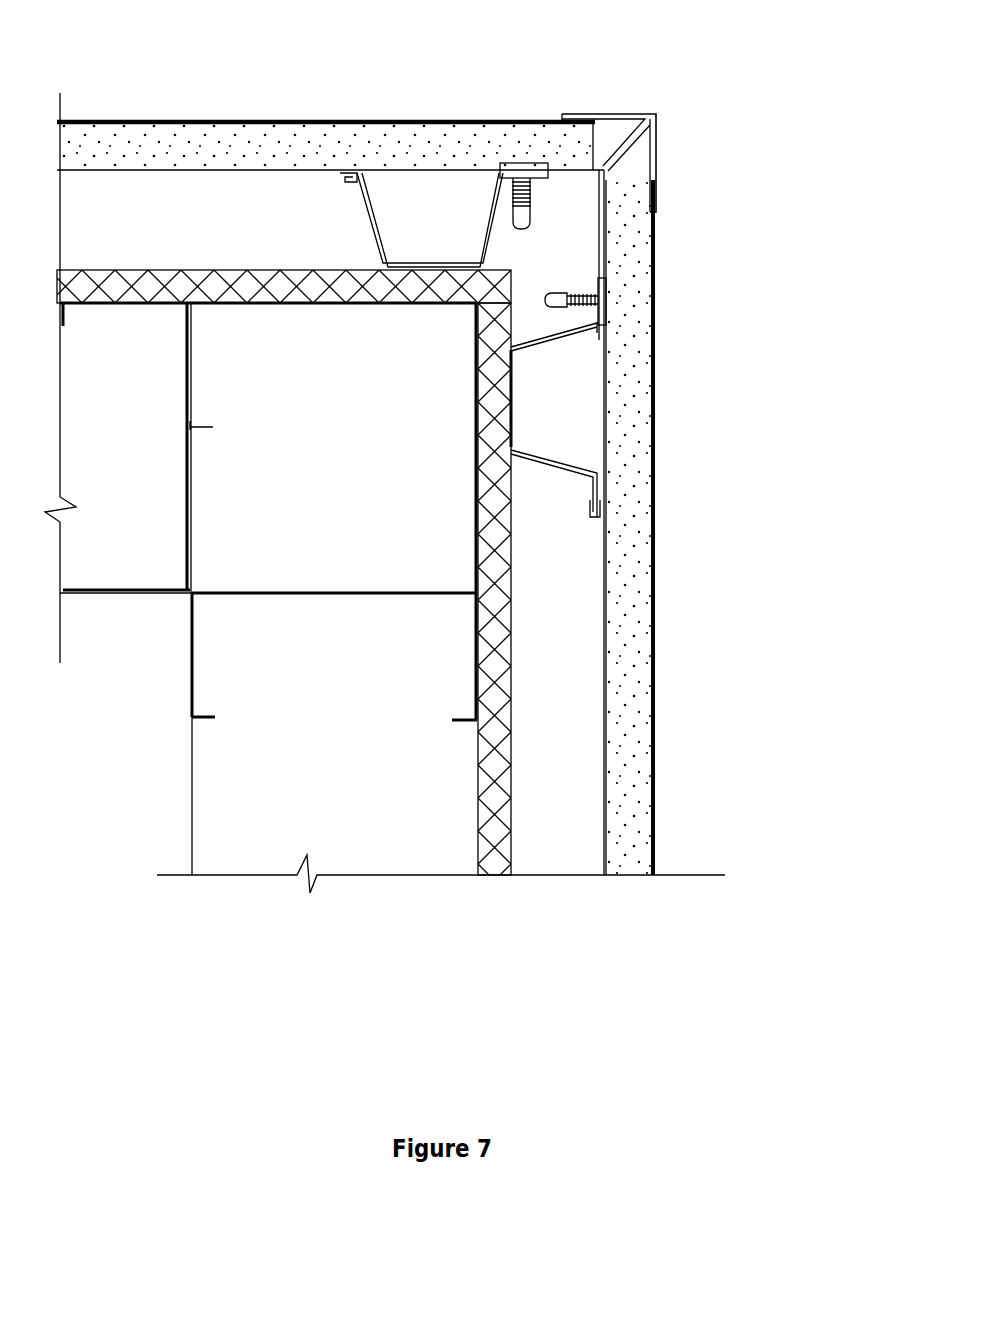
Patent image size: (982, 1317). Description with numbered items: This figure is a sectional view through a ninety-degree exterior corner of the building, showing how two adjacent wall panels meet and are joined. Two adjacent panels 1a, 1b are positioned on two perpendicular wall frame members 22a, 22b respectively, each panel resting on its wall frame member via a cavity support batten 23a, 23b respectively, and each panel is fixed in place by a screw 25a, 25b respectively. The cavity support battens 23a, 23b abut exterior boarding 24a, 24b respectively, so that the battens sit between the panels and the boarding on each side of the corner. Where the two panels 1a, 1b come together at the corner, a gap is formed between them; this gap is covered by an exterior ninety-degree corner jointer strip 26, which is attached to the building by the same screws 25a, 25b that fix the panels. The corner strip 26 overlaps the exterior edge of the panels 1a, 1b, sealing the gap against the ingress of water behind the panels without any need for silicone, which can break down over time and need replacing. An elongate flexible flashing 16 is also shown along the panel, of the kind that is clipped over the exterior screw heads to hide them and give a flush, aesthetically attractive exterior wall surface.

The panel 1a is at (656, 592).
The panel 1b is at (216, 120).
The elongate flexible flashing 16 is at (352, 138).
The wall frame member 22a is at (370, 763).
The wall frame member 22b is at (140, 323).
The cavity support batten 23a is at (511, 418).
The cavity support batten 23b is at (373, 210).
The exterior boarding 24a is at (512, 578).
The exterior boarding 24b is at (293, 268).
The screw 25a is at (606, 298).
The screw 25b is at (530, 168).
The exterior 90° corner jointer strip 26 is at (657, 193).